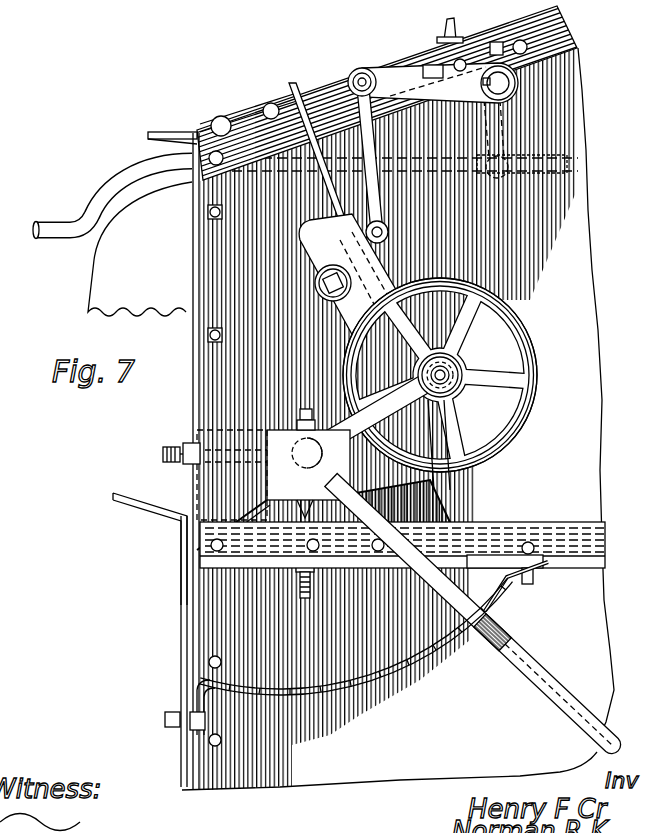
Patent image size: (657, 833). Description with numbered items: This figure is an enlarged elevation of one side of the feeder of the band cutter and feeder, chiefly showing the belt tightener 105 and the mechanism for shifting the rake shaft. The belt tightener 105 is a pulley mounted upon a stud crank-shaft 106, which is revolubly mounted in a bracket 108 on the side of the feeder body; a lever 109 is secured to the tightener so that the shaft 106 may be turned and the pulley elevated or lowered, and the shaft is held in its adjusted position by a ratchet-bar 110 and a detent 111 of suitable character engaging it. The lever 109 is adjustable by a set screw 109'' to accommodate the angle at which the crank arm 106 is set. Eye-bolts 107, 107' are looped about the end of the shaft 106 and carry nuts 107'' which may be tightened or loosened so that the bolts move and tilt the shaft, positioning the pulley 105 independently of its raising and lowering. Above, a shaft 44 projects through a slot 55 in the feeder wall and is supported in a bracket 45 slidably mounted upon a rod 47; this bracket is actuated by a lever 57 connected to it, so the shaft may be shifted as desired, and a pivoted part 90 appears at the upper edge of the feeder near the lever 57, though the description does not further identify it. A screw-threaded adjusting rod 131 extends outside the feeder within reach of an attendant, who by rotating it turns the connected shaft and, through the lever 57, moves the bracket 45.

The shaft 44 is at (334, 298).
The bracket 45 is at (386, 244).
The rod 47 is at (309, 150).
The slot 55 is at (350, 286).
The lever 57 is at (403, 70).
The pivot link 90 is at (512, 84).
The belt tightener 105 is at (527, 320).
The stud crank-shaft 106 is at (347, 424).
The eye-bolt 107 is at (153, 454).
The eye-bolt 107' is at (346, 619).
The nut 107'' is at (258, 539).
The bracket 108 is at (273, 475).
The lever 109 is at (473, 614).
The set screw 109'' is at (220, 416).
The ratchet-bar 110 is at (408, 672).
The detent 111 is at (497, 610).
The adjusting rod 131 is at (44, 226).